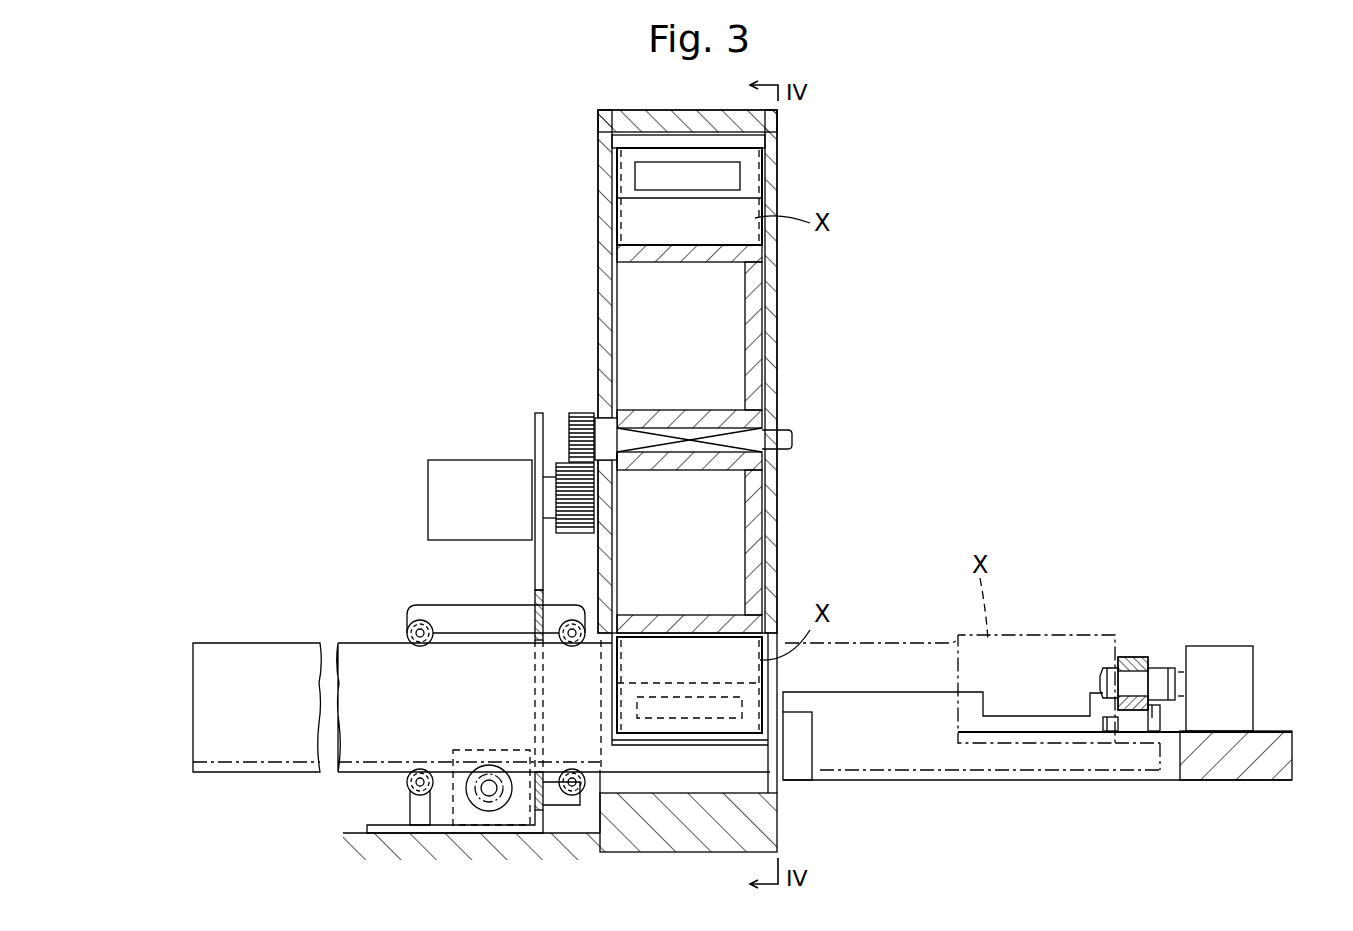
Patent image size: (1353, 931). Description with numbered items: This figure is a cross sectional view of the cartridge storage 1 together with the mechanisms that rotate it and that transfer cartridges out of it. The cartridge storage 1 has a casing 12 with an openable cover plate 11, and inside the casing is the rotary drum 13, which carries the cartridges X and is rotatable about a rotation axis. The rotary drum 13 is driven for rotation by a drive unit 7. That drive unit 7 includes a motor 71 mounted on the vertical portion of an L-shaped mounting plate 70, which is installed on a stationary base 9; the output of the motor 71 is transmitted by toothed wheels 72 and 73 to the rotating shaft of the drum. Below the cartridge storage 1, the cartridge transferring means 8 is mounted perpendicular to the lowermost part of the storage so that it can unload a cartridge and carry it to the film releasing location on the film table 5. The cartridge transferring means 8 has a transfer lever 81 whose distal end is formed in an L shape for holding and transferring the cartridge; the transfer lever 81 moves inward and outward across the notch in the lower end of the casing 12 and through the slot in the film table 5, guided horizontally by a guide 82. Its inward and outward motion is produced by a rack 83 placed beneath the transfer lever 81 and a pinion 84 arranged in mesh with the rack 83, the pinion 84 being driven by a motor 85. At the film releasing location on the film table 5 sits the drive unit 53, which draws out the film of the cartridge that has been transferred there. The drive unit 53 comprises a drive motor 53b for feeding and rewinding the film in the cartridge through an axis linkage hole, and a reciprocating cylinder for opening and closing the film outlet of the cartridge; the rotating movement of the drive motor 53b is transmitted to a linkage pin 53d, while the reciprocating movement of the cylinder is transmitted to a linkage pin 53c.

The cartridge storage 1 is at (589, 229).
The film table 5 is at (1276, 742).
The drive unit 7 is at (480, 585).
The cartridge transferring means 8 is at (452, 720).
The stationary base 9 is at (776, 822).
The openable cover plate 11 is at (778, 340).
The casing 12 is at (598, 109).
The rotary drum 13 is at (676, 141).
The drive unit 53 is at (1201, 707).
The drive motor 53b is at (1243, 667).
The linkage pin 53c is at (1100, 722).
The linkage pin 53d is at (1100, 680).
The L-shaped mounting plate 70 is at (538, 412).
The motor 71 is at (455, 470).
The toothed wheel 72 is at (575, 534).
The toothed wheel 73 is at (581, 412).
The transfer lever 81 is at (363, 660).
The guide 82 is at (470, 606).
The rack 83 is at (365, 773).
The pinion 84 is at (497, 802).
The motor 85 is at (469, 830).